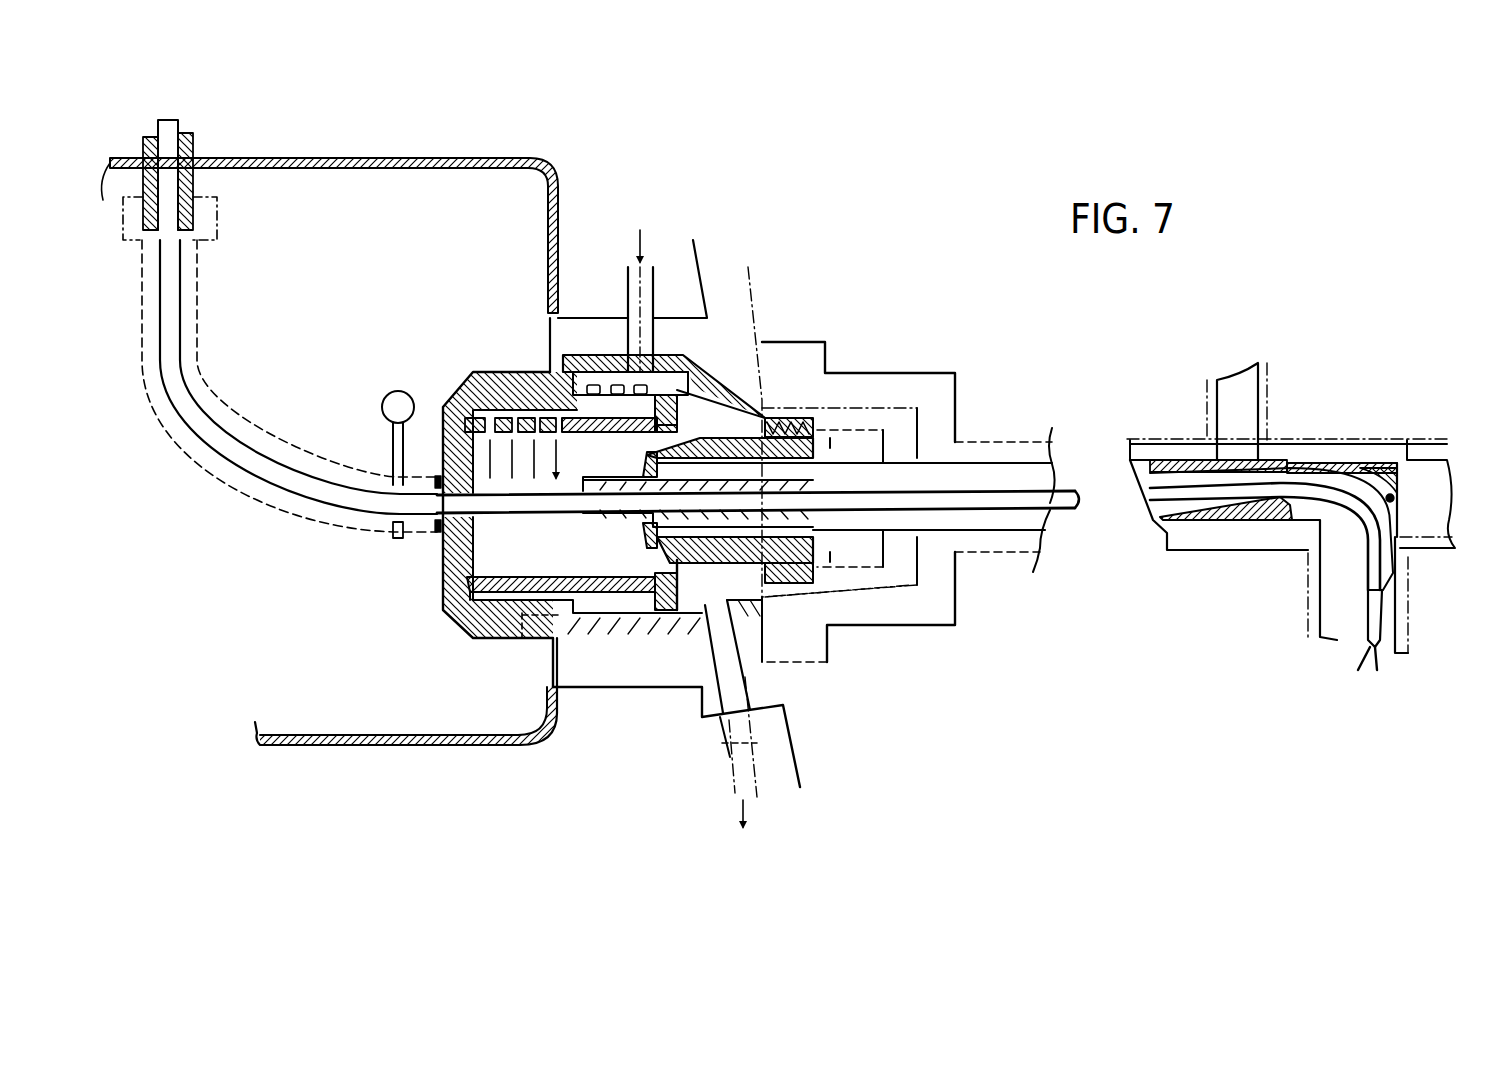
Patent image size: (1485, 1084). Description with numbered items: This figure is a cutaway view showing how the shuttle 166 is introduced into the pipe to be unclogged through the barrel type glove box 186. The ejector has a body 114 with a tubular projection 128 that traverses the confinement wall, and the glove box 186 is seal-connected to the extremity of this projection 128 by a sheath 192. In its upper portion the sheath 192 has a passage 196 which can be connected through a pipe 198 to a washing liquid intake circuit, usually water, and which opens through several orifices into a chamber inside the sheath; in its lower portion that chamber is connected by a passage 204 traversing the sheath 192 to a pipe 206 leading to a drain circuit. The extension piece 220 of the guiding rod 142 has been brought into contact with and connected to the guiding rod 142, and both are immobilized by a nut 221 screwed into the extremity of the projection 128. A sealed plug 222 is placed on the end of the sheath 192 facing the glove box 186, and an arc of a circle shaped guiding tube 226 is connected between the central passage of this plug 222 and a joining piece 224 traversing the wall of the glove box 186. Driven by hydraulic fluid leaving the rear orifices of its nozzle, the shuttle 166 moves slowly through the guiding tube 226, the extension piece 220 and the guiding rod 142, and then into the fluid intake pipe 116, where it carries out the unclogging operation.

The body 114 is at (1377, 440).
The fluid intake pipe 116 is at (1310, 598).
The tubular projection 128 is at (958, 390).
The guiding rod 142 is at (1235, 458).
The shuttle 166 is at (1380, 620).
The glove box 186 is at (467, 745).
The sheath 192 is at (657, 667).
The passage 196 is at (645, 348).
The pipe 198 is at (627, 285).
The passage 204 is at (865, 720).
The pipe 206 is at (733, 767).
The extension piece 220 is at (1005, 468).
The nut 221 is at (802, 417).
The sealed plug 222 is at (448, 607).
The joining piece 224 is at (193, 148).
The guiding tube 226 is at (267, 437).